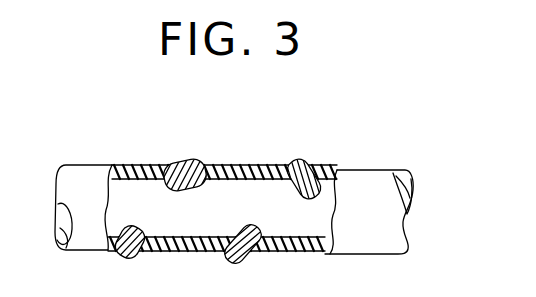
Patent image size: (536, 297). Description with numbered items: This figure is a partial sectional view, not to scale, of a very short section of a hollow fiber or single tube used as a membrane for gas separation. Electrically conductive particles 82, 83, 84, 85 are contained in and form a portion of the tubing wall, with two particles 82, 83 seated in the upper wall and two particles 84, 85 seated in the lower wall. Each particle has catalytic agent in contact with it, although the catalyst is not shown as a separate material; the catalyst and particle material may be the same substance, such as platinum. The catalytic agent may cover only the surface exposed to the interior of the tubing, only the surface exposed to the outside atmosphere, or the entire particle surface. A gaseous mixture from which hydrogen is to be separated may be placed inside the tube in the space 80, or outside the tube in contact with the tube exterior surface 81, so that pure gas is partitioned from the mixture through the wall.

The space 80 is at (242, 214).
The tube exterior surface 81 is at (343, 170).
The particle 82 is at (297, 163).
The particle 83 is at (183, 162).
The particle 84 is at (250, 263).
The particle 85 is at (125, 262).